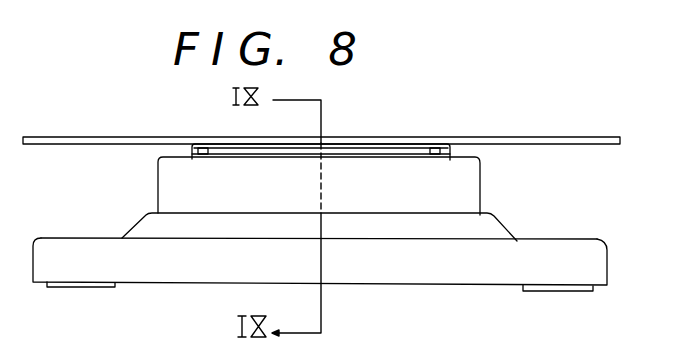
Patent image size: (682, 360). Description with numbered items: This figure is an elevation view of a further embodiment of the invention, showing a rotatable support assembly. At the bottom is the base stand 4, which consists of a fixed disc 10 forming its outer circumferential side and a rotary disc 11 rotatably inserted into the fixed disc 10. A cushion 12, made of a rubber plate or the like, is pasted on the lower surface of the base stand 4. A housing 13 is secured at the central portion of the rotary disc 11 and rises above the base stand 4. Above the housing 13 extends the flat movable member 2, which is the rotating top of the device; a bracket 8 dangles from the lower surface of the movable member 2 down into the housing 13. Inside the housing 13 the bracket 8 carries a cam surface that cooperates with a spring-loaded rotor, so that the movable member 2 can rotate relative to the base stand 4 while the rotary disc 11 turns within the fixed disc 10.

The movable member 2 is at (535, 139).
The base stand 4 is at (540, 238).
The bracket 8 is at (425, 150).
The fixed disc 10 is at (340, 242).
The rotary disc 11 is at (492, 222).
The cushion 12 is at (550, 292).
The housing 13 is at (476, 176).